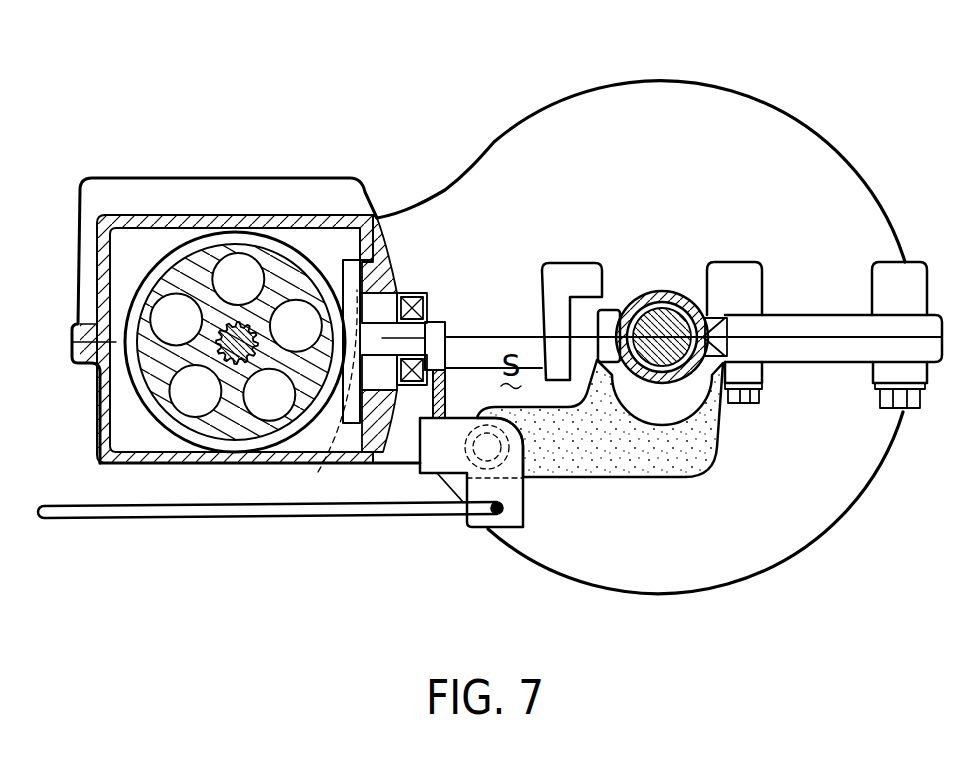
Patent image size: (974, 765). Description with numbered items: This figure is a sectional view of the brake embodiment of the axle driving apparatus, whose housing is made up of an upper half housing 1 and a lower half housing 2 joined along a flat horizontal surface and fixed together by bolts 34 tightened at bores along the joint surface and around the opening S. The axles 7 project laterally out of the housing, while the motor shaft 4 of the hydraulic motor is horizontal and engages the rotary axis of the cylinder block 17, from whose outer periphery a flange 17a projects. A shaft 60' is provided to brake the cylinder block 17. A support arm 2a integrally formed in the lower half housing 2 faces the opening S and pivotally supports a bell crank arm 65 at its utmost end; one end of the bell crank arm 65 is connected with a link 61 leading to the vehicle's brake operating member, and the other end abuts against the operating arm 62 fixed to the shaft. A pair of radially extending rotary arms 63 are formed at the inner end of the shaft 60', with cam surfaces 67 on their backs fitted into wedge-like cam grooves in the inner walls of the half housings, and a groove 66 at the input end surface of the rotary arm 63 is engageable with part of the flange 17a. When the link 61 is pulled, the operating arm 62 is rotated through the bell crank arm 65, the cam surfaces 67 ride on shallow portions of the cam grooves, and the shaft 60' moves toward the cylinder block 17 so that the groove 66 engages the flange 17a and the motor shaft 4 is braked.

The upper half housing 1 is at (795, 123).
The lower half housing 2 is at (840, 514).
The support arm 2a is at (657, 478).
The motor shaft 4 is at (220, 349).
The axles 7 is at (668, 307).
The cylinder block 17 is at (248, 250).
The flange 17a is at (182, 252).
The bolts 34 is at (742, 405).
The shaft 60' is at (257, 320).
The link 61 is at (242, 520).
The operating arm 62 is at (455, 368).
The rotary arms 63 is at (350, 260).
The bell crank arm 65 is at (520, 497).
The groove 66 is at (325, 462).
The cam surfaces 67 is at (390, 268).